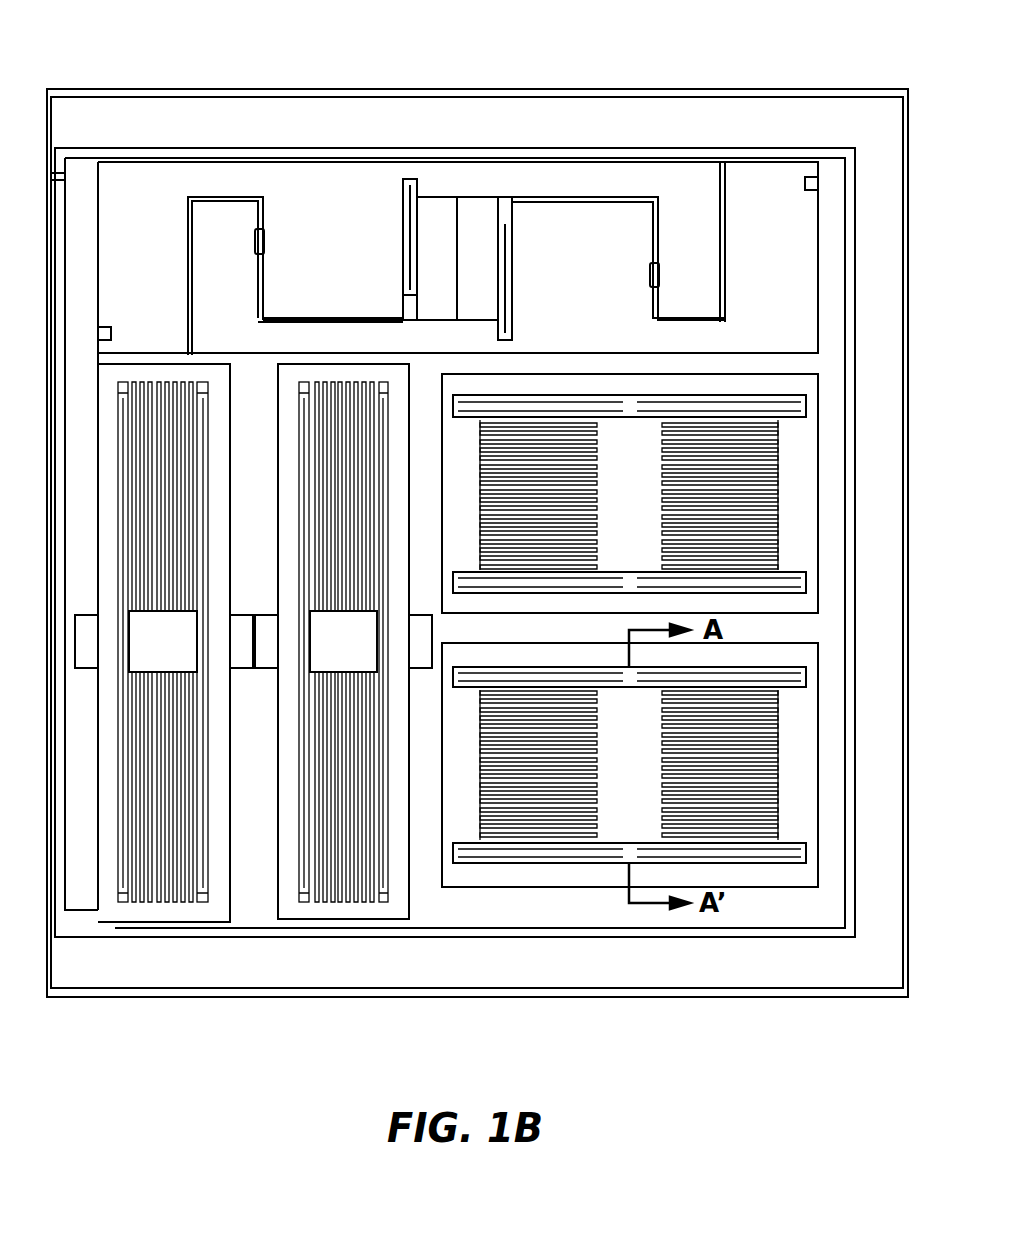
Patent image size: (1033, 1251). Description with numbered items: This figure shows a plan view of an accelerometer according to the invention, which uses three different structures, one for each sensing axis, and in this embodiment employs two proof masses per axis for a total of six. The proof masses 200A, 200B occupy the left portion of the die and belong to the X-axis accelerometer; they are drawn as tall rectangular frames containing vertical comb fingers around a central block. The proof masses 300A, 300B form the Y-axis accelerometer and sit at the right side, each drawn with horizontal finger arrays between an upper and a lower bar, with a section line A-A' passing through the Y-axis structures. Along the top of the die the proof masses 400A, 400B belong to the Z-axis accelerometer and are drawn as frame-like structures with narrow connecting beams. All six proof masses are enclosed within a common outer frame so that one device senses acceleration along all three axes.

The proof mass 400A is at (333, 180).
The proof mass 400B is at (586, 200).
The proof mass 300A is at (753, 388).
The proof mass 300B is at (555, 853).
The proof mass 200A is at (172, 880).
The proof mass 200B is at (340, 880).